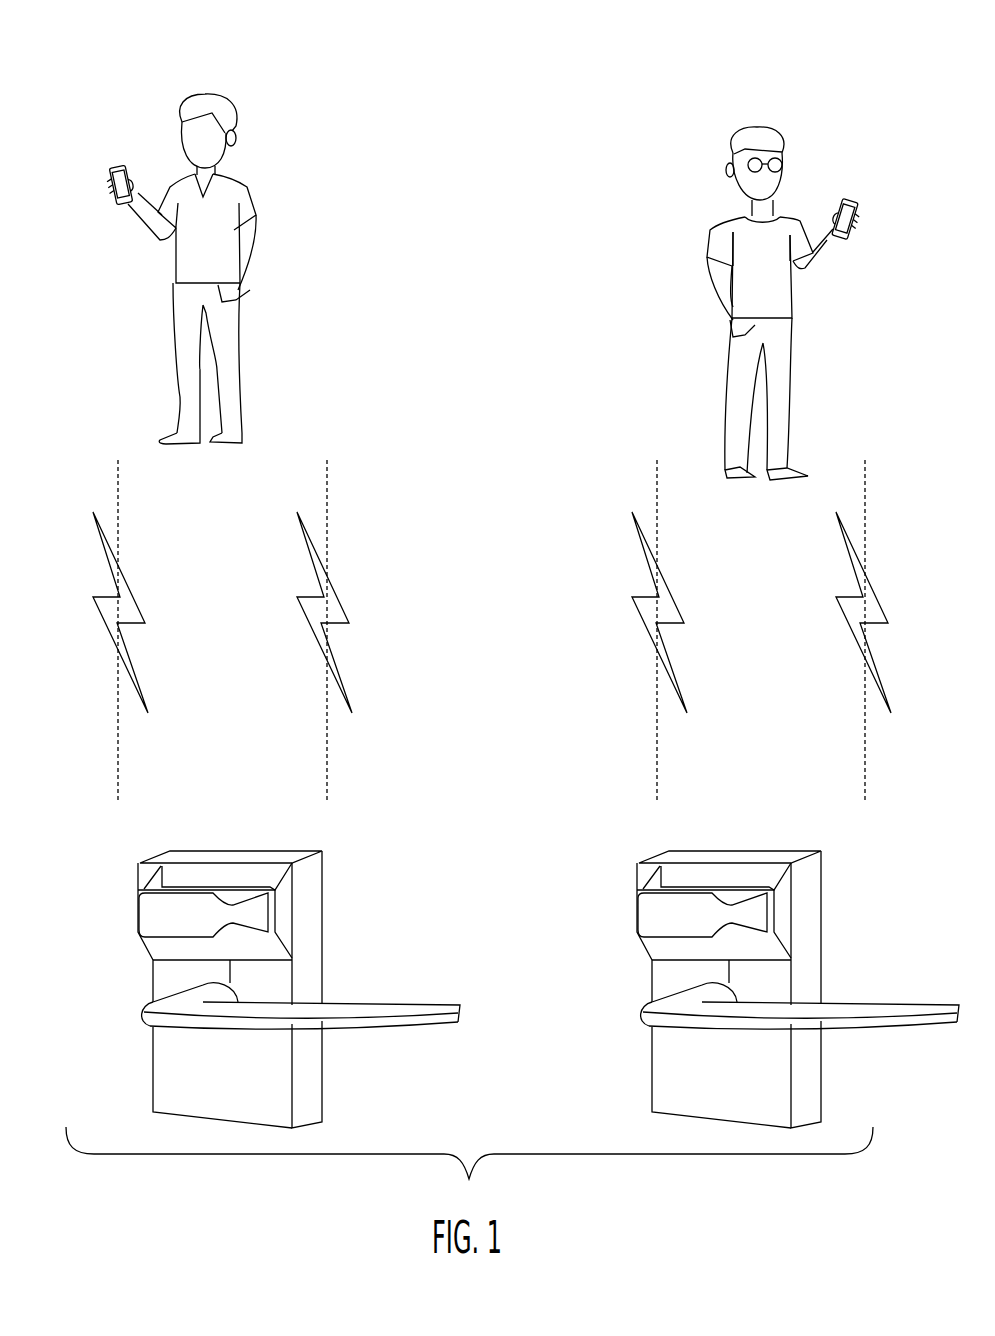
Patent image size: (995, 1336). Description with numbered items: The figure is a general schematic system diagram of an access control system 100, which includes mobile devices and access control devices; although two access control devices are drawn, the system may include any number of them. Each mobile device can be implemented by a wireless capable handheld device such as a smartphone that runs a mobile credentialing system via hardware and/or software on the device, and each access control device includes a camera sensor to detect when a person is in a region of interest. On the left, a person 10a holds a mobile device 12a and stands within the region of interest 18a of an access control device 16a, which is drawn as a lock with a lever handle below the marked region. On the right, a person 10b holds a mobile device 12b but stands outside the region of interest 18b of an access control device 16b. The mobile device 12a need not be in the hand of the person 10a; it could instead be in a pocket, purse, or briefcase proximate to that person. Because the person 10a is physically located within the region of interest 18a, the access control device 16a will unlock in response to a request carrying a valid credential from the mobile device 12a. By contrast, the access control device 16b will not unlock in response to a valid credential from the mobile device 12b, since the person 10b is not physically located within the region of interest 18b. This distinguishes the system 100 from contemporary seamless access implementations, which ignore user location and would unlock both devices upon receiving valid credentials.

The access control system 100 is at (803, 72).
The person 10a is at (255, 216).
The person 10b is at (707, 240).
The mobile device 12a is at (110, 168).
The mobile device 12b is at (850, 200).
The access control device 16a is at (323, 957).
The access control device 16b is at (822, 957).
The region of interest 18a is at (243, 741).
The region of interest 18b is at (782, 741).